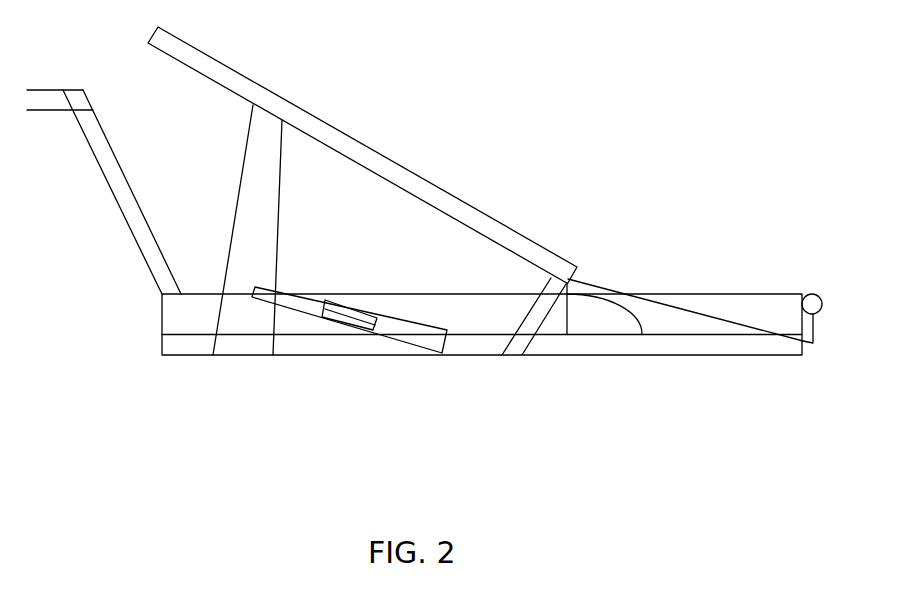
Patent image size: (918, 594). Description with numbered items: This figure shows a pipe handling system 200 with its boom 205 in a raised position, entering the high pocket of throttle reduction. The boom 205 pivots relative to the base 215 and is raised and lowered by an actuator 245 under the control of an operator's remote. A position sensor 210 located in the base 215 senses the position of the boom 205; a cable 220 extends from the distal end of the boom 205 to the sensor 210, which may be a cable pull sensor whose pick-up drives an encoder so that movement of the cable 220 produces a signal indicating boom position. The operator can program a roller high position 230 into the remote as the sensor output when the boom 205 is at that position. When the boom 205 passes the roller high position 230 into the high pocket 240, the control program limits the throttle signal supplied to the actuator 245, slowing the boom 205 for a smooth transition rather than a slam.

The pipe handling system 200 is at (723, 486).
The boom 205 is at (388, 162).
The position sensor 210 is at (817, 295).
The base 215 is at (615, 352).
The cable 220 is at (650, 300).
The roller high position 230 is at (565, 283).
The high pocket 240 is at (592, 290).
The actuator 245 is at (413, 340).